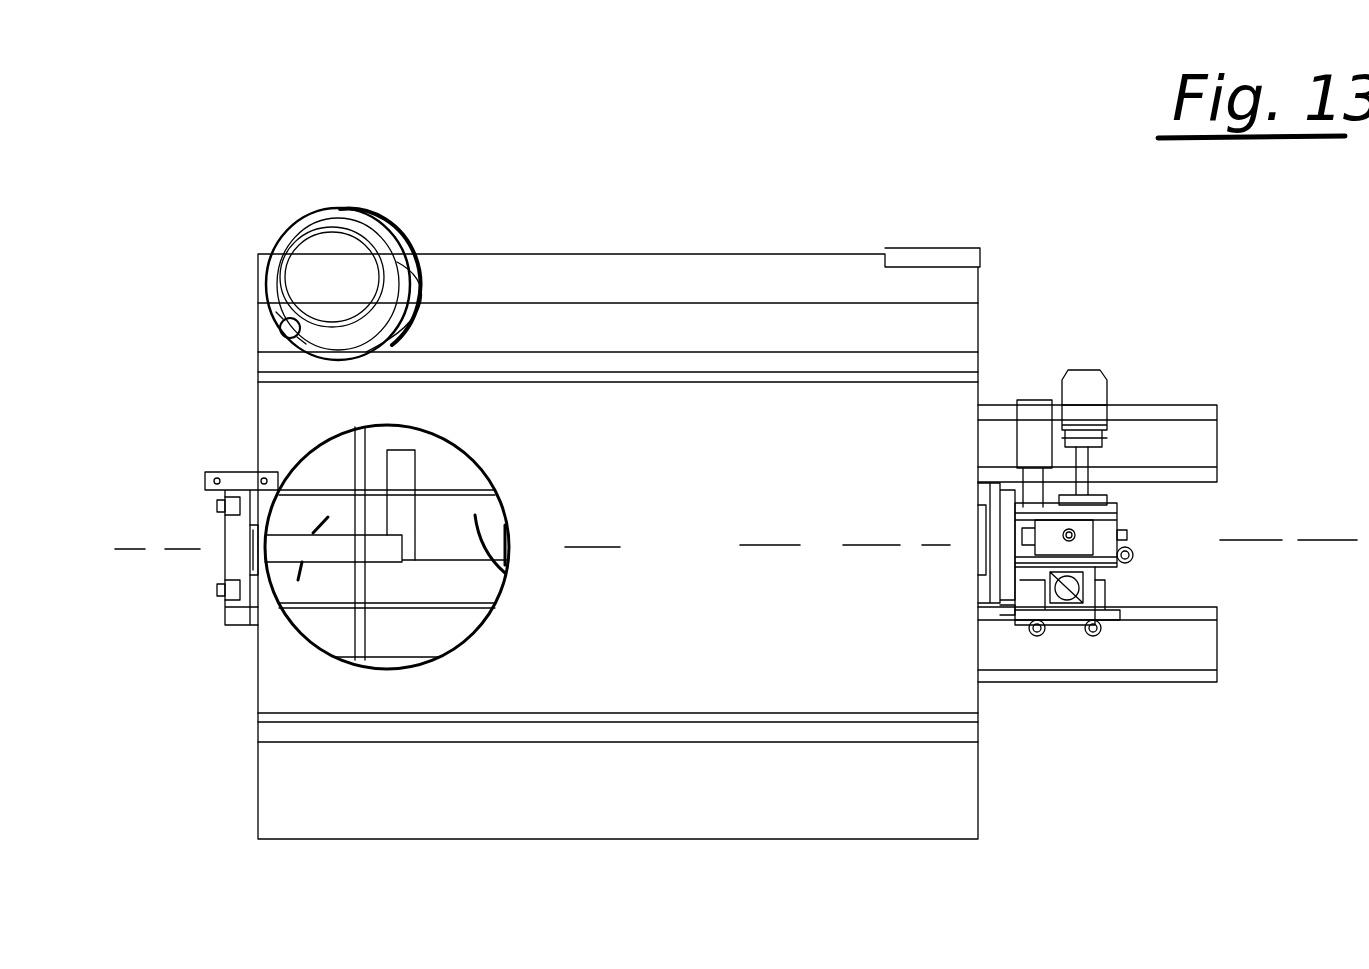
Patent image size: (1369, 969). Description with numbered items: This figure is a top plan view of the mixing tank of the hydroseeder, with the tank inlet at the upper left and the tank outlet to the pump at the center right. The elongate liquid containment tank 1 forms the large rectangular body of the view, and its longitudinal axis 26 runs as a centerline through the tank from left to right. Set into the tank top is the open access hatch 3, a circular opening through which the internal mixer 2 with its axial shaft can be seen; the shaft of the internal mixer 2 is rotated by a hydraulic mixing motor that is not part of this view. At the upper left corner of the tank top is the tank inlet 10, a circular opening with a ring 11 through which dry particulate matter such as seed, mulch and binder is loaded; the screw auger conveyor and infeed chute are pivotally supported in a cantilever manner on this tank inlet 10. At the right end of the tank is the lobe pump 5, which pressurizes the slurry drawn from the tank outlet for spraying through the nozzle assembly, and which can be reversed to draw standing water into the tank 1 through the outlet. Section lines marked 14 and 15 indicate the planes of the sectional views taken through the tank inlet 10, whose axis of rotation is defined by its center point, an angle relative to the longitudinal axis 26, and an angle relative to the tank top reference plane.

The liquid containment tank 1 is at (978, 800).
The internal mixer 2 is at (450, 557).
The access hatch 3 is at (473, 460).
The lobe pump 5 is at (1127, 530).
The tank inlet 10 is at (400, 212).
The ring 11 is at (292, 230).
The section line 14 is at (258, 305).
The section line 15 is at (356, 397).
The longitudinal axis 26 is at (752, 545).